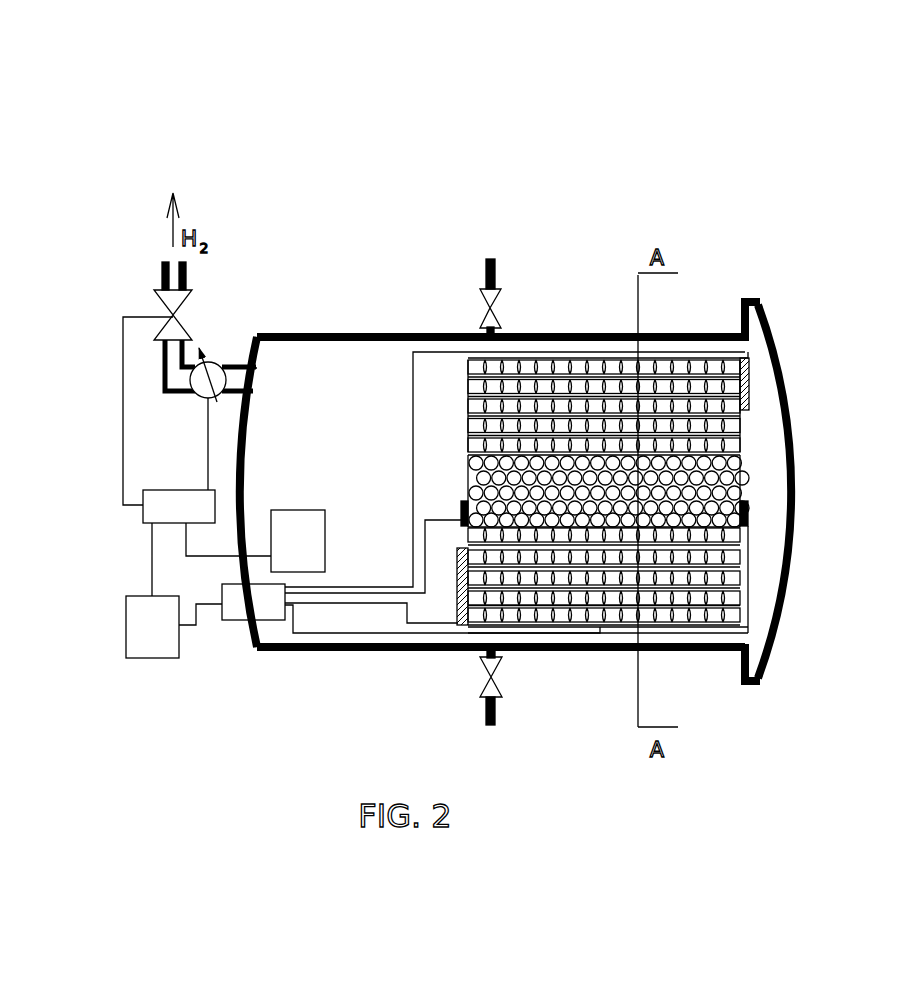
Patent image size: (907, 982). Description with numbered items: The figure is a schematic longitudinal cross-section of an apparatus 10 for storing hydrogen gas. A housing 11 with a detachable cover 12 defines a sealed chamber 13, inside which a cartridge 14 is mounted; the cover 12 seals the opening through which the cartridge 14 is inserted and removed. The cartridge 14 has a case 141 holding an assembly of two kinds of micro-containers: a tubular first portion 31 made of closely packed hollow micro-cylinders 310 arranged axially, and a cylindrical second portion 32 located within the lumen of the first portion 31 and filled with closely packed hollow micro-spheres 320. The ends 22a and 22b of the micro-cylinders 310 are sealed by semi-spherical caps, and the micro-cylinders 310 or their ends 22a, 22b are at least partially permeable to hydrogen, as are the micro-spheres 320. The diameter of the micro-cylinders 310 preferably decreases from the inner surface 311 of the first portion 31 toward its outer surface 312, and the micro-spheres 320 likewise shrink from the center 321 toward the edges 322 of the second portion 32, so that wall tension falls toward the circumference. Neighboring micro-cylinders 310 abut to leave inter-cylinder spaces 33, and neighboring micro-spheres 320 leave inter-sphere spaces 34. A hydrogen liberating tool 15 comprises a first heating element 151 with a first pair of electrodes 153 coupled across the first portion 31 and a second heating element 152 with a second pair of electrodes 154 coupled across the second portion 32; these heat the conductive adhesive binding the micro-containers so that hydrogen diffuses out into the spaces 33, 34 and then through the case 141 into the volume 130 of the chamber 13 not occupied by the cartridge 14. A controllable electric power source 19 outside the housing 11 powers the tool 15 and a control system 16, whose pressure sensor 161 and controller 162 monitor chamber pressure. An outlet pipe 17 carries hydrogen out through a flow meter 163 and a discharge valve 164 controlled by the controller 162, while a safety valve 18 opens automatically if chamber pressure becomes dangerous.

The apparatus 10 is at (738, 235).
The housing 11 is at (515, 332).
The detachable cover 12 is at (788, 396).
The chamber 13 is at (317, 654).
The cartridge 14 is at (672, 628).
The hydrogen liberating tool 15 is at (397, 438).
The control system 16 is at (145, 548).
The outlet pipe 17 is at (170, 392).
The safety valve 18 is at (496, 690).
The controllable electric power source 19 is at (165, 645).
The end of micro-cylinders 22a is at (467, 385).
The end of micro-cylinders 22b is at (740, 388).
The first portion 31 is at (636, 332).
The second portion 32 is at (602, 496).
The inter-cylinder spaces 33 is at (725, 585).
The inter-sphere spaces 34 is at (713, 530).
The volume 130 is at (300, 385).
The case 141 is at (728, 365).
The first heating element 151 is at (385, 646).
The second heating element 152 is at (450, 509).
The first pair of electrodes 153 is at (752, 369).
The second pair of electrodes 154 is at (462, 523).
The pressure sensor 161 is at (317, 560).
The controller 162 is at (160, 518).
The flow meter 163 is at (211, 361).
The discharge valve 164 is at (176, 315).
The micro-cylinders 310 is at (522, 403).
The inner surface 311 is at (712, 435).
The outer surface 312 is at (588, 362).
The micro-spheres 320 is at (733, 495).
The center 321 is at (467, 490).
The edges 322 is at (467, 461).